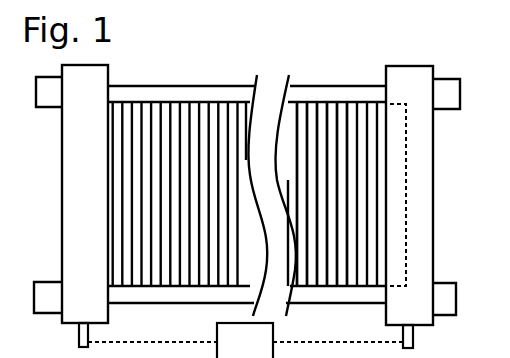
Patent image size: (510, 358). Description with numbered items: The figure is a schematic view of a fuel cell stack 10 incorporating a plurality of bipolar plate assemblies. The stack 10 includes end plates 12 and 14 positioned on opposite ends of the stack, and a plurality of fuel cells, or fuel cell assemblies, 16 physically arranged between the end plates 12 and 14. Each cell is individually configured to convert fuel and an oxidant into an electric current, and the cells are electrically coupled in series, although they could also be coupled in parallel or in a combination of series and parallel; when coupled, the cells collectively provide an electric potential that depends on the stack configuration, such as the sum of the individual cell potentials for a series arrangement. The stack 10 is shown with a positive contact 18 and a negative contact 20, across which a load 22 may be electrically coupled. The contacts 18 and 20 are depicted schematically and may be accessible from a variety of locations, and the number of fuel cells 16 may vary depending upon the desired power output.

The fuel cell stack 10 is at (193, 61).
The end plate 12 is at (62, 204).
The end plate 14 is at (433, 206).
The fuel cells 16 is at (340, 77).
The positive contact 18 is at (79, 338).
The negative contact 20 is at (413, 341).
The load 22 is at (260, 354).